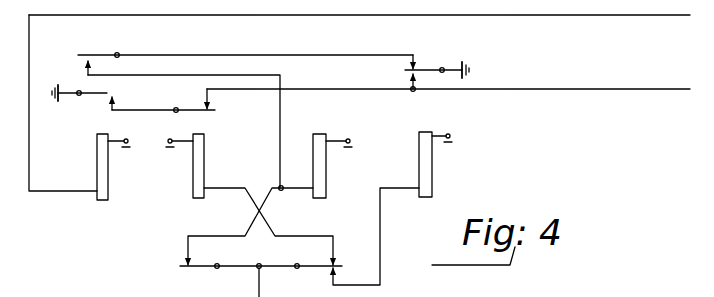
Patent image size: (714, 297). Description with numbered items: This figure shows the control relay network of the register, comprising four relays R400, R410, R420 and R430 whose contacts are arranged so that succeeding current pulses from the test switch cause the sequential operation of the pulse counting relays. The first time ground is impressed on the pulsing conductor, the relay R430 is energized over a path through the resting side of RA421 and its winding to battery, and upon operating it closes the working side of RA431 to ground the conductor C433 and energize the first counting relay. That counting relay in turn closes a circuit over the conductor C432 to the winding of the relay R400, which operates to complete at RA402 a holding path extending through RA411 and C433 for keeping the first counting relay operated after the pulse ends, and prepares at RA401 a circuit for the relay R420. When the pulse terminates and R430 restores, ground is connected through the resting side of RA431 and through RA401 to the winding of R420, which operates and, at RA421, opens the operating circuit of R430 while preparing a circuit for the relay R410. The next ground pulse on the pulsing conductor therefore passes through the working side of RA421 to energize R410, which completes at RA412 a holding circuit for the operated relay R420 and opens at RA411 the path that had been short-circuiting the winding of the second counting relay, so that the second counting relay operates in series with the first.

The contact of relay R400 RA401 is at (99, 55).
The contact of relay R400 RA402 is at (108, 95).
The contact of relay R410 RA411 is at (197, 112).
The contact of relay R410 RA412 is at (208, 268).
The contact of relay R420 RA421 is at (325, 268).
The contact of relay R430 RA431 is at (416, 70).
The conductor C432 is at (673, 17).
The conductor C433 is at (676, 92).
The relay R400 is at (104, 186).
The relay R410 is at (200, 186).
The relay R420 is at (322, 187).
The relay R430 is at (428, 186).